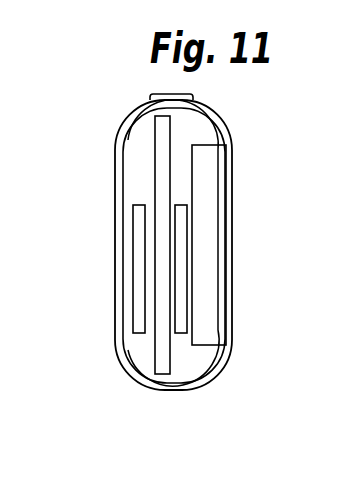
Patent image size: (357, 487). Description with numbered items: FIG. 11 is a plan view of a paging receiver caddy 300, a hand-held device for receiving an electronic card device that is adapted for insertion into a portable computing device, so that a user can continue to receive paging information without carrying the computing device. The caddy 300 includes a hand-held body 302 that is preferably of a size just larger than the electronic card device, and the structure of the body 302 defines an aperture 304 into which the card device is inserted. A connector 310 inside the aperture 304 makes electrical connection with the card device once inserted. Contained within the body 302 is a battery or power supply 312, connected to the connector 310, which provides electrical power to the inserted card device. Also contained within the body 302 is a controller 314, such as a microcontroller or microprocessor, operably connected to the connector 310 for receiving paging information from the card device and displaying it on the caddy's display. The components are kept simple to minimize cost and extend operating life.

The paging receiver caddy 300 is at (177, 255).
The hand-held body 302 is at (228, 113).
The aperture 304 is at (163, 375).
The connector 310 is at (133, 251).
The battery or power supply 312 is at (224, 334).
The controller 314 is at (188, 228).